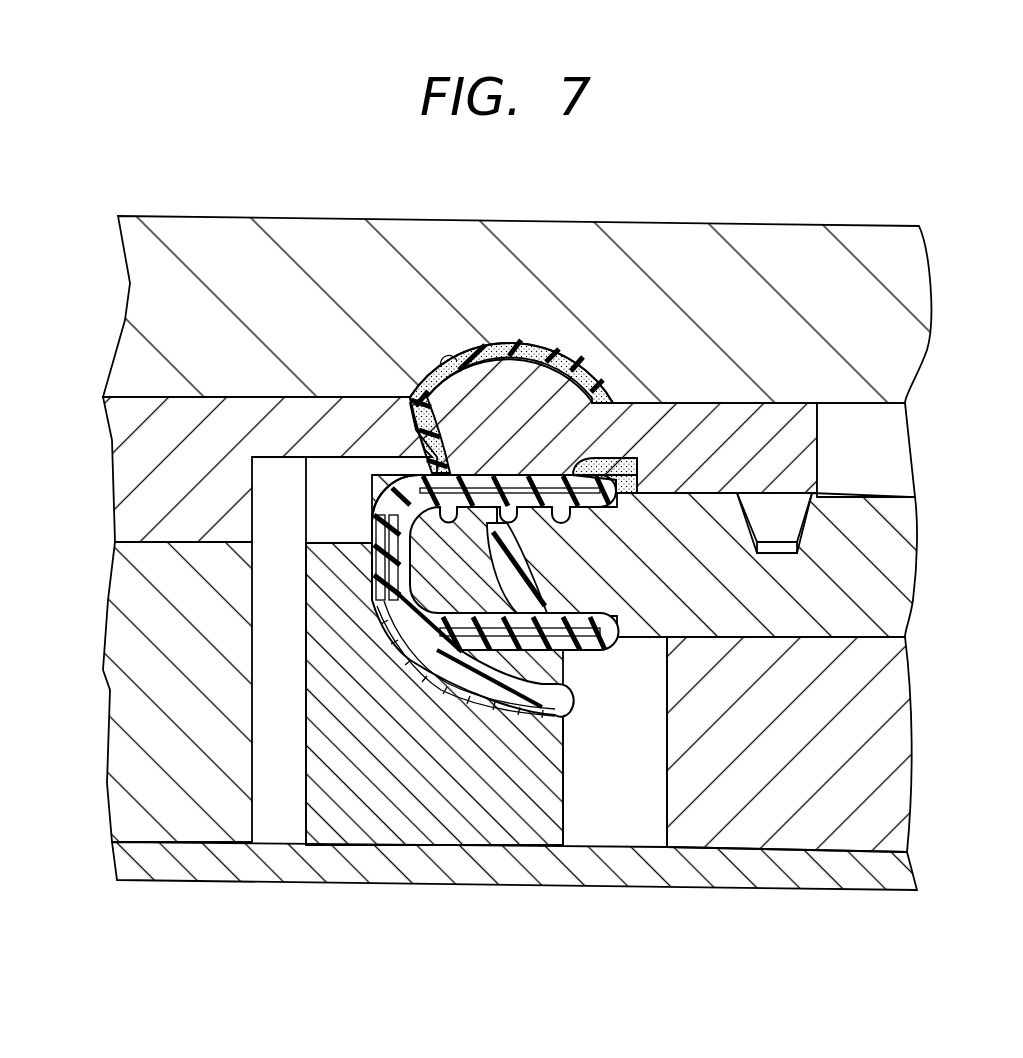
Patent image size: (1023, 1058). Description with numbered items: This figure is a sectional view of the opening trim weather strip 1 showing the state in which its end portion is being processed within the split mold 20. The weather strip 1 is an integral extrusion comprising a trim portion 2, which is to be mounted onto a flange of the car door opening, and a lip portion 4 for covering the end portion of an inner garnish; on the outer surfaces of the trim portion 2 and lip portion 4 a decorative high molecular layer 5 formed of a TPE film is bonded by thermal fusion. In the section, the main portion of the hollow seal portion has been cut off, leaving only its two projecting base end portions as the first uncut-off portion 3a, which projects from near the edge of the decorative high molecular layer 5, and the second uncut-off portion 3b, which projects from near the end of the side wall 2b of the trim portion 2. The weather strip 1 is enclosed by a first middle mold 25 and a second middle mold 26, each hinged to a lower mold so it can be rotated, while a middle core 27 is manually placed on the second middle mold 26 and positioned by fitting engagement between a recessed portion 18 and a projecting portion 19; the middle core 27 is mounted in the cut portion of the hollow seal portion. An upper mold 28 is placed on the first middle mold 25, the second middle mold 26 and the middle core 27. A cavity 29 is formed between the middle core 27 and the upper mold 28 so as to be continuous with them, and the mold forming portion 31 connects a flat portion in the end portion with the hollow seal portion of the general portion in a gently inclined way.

The opening trim weather strip 1 is at (468, 600).
The trim portion 2 is at (372, 524).
The side wall 2b is at (494, 475).
The first uncut-off portion 3a is at (412, 382).
The second uncut-off portion 3b is at (637, 470).
The lip portion 4 is at (563, 733).
The decorative high molecular layer 5 is at (383, 495).
The recessed portion 18 is at (752, 510).
The projecting portion 19 is at (790, 513).
The split mold 20 is at (277, 214).
The first middle mold 25 is at (130, 473).
The second middle mold 26 is at (916, 553).
The middle core 27 is at (808, 457).
The upper mold 28 is at (745, 240).
The cavity 29 is at (455, 358).
The mold forming portion 31 is at (506, 343).